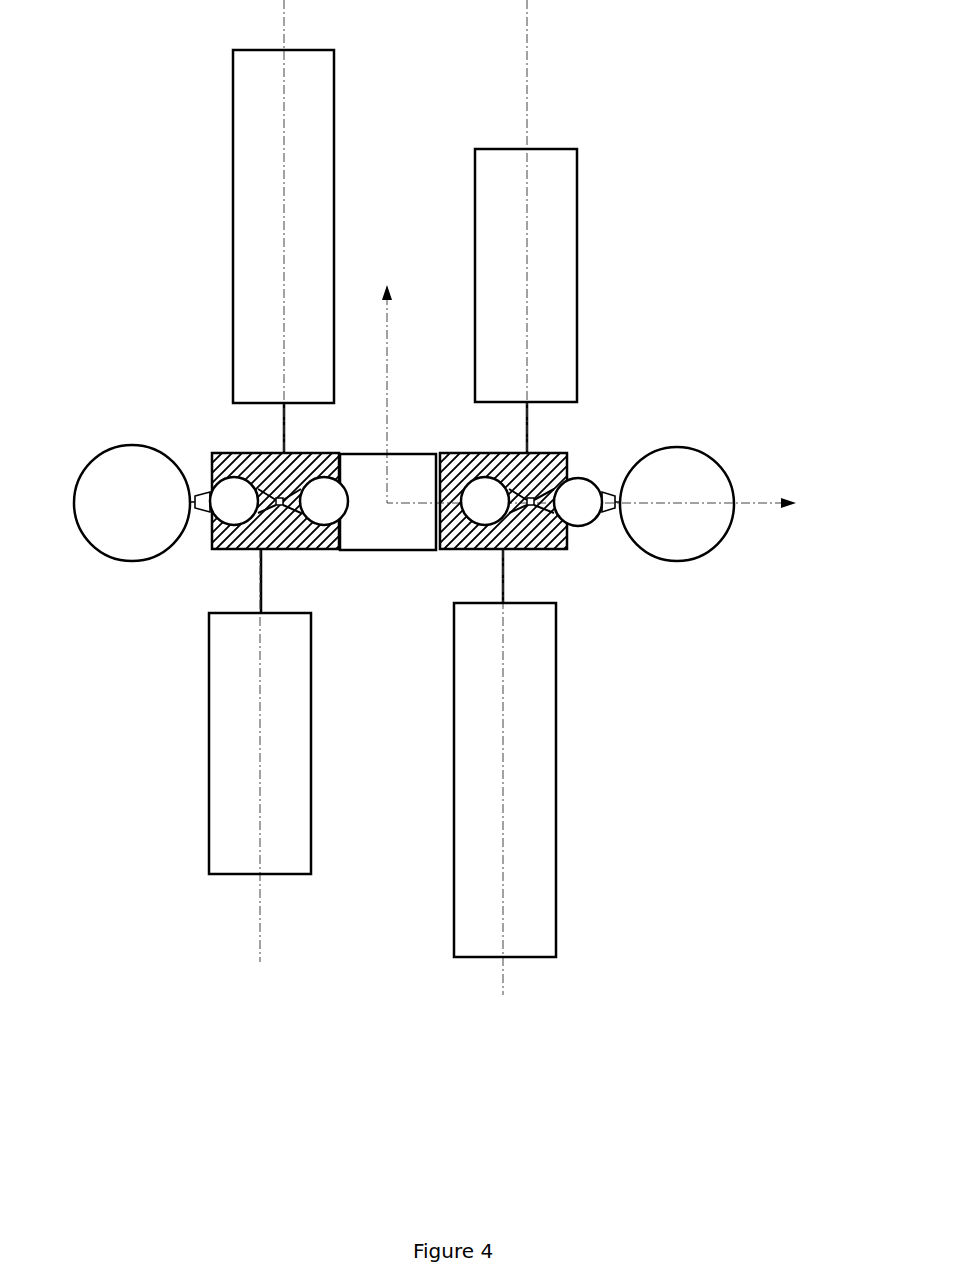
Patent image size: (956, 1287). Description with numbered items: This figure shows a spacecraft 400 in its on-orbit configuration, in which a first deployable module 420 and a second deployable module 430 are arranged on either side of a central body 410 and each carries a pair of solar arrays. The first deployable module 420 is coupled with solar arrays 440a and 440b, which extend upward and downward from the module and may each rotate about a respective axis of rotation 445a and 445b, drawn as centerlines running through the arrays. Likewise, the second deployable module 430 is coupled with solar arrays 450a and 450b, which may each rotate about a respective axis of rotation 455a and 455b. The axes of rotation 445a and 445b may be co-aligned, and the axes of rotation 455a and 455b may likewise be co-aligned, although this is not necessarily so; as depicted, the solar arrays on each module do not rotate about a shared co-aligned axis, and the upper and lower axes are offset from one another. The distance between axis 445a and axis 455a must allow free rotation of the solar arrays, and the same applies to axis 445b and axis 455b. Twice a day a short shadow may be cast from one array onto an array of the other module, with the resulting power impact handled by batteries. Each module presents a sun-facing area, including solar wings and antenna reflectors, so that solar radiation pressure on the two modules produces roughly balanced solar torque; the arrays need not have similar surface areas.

The spacecraft 400 is at (141, 39).
The central body 410 is at (370, 551).
The first deployable module 420 is at (212, 550).
The second deployable module 430 is at (530, 552).
The solar array 440a is at (232, 243).
The solar array 440b is at (312, 752).
The axis of rotation 445a is at (283, 3).
The axis of rotation 445b is at (258, 912).
The solar array 450a is at (475, 167).
The solar array 450b is at (557, 742).
The axis of rotation 455a is at (526, 2).
The axis of rotation 455b is at (502, 977).